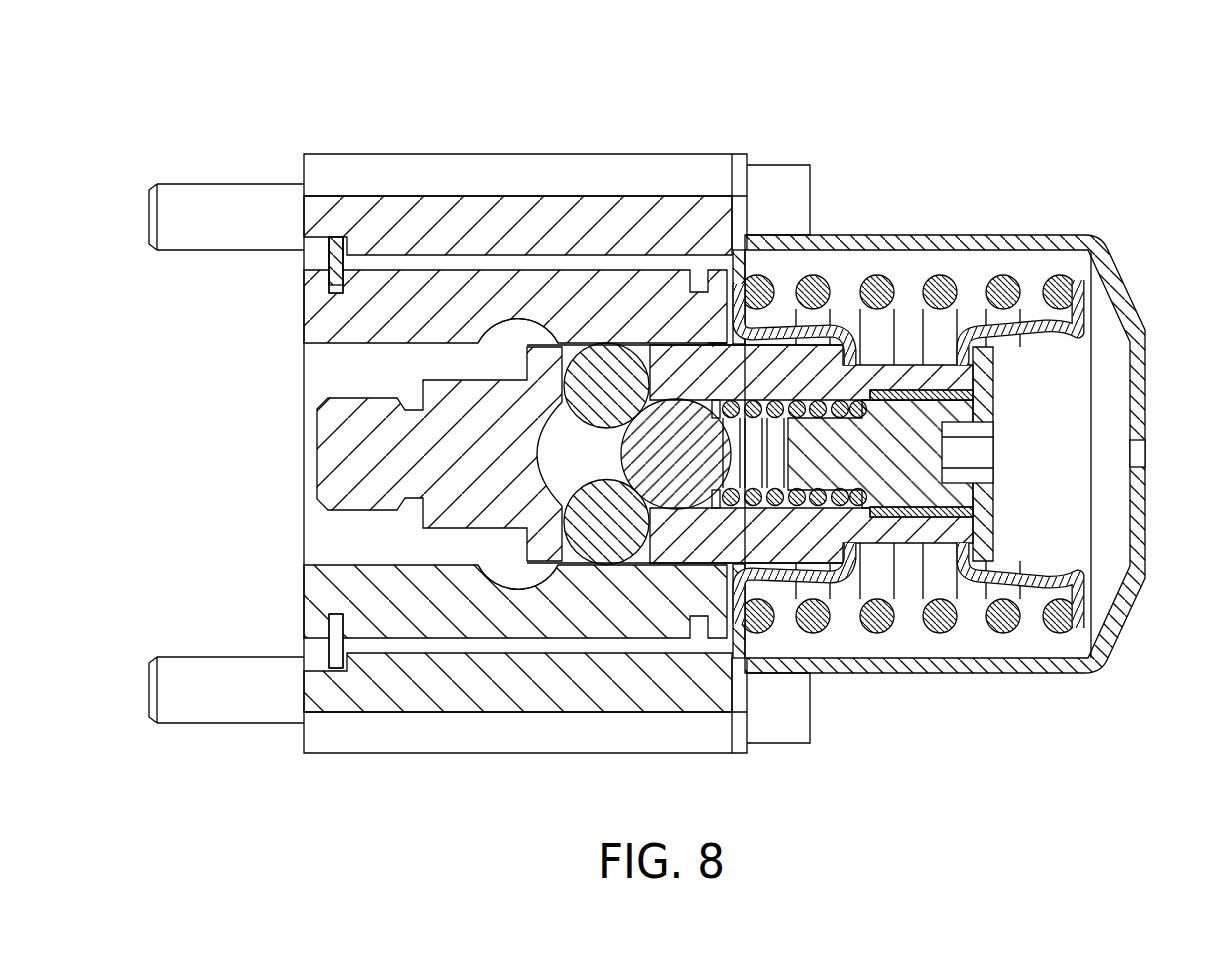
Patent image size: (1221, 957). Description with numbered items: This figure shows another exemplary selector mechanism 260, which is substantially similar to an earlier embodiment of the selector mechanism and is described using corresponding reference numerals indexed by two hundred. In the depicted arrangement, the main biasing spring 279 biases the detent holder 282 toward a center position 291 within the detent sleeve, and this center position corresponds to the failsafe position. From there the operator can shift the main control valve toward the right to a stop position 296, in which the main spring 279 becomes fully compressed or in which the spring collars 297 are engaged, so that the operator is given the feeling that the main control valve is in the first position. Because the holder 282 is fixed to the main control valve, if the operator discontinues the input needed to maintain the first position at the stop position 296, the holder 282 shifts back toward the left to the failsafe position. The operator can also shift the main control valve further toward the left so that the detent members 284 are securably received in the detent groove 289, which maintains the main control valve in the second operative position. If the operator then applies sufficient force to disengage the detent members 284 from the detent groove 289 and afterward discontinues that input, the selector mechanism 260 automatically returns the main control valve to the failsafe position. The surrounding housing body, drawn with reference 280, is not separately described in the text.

The selector mechanism 260 is at (1124, 100).
The main biasing spring 279 is at (947, 288).
The housing 280 is at (437, 626).
The detent holder 282 is at (473, 512).
The detent members 284 is at (607, 572).
The detent groove 289 is at (500, 330).
The center position 291 is at (611, 348).
The stop position 296 is at (713, 345).
The spring collars 297 is at (782, 322).